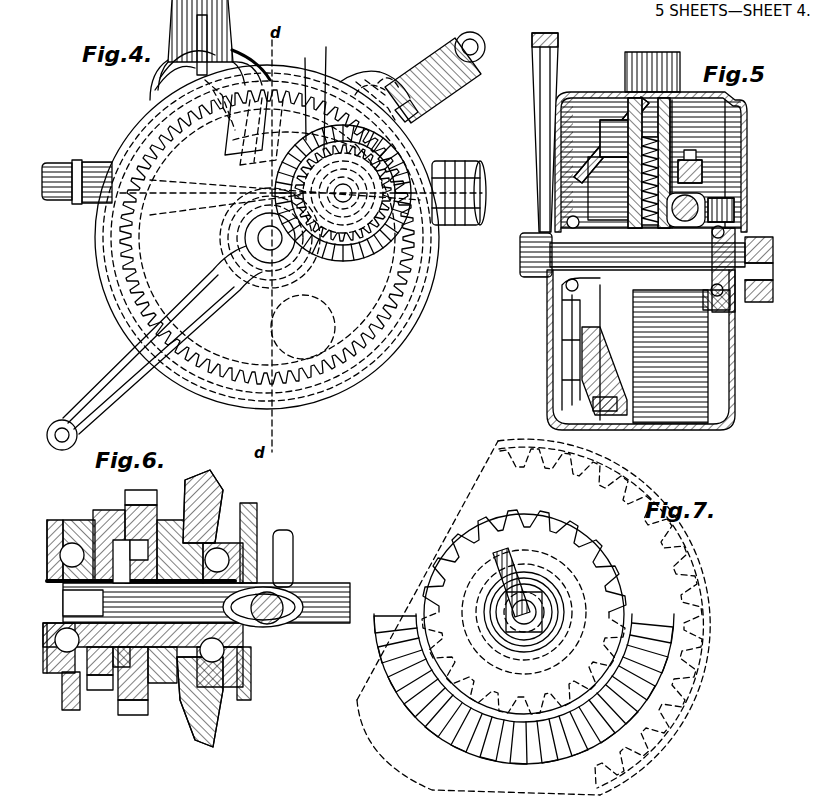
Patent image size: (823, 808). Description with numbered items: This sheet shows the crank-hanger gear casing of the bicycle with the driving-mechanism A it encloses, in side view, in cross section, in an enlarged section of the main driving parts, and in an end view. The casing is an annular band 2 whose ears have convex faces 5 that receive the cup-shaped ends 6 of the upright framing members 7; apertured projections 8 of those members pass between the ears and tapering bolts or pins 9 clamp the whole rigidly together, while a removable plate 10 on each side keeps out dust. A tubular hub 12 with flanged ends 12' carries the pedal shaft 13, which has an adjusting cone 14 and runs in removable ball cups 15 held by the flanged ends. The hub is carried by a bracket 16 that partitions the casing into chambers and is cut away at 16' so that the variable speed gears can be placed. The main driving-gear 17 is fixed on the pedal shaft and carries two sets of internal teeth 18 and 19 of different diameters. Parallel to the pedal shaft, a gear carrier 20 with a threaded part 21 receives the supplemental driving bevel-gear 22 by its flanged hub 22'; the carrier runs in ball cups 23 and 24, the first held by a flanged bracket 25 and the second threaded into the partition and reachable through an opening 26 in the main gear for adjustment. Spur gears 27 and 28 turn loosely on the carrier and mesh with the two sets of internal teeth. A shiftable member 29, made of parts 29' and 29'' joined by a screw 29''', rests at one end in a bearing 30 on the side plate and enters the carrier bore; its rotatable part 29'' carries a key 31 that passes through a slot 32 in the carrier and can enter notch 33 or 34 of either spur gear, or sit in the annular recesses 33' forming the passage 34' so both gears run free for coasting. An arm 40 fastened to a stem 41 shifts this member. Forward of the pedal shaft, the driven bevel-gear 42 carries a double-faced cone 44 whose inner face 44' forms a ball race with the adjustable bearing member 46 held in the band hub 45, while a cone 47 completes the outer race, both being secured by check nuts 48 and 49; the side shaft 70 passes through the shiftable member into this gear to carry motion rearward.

In FIG. 4, the annular member or band 2 is at (312, 402).
In FIG. 4, the convex faces 5 is at (172, 82).
In FIG. 4, the cup-shaped ends 6 is at (170, 96).
In FIG. 4, the upright framing members 7 is at (175, 25).
In FIG. 5, the upright framing members 7 is at (652, 60).
In FIG. 4, the transversely apertured projections 8 is at (300, 80).
In FIG. 4, the tapering bolts or pins 9 is at (400, 100).
In FIG. 4, the removable plate 10 is at (368, 372).
In FIG. 5, the removable plate 10 is at (740, 380).
In FIG. 4, the tubular hub 12 is at (255, 238).
In FIG. 5, the tubular hub 12 is at (670, 356).
In FIG. 4, the flanged ends 12' is at (202, 241).
In FIG. 5, the flanged ends 12' is at (594, 349).
In FIG. 4, the pedal shaft 13 is at (264, 262).
In FIG. 5, the pedal shaft 13 is at (690, 268).
In FIG. 5, the adjusting cone 14 is at (735, 306).
In FIG. 5, the removable ball cups 15 is at (728, 312).
In FIG. 5, the bracket 16 is at (541, 349).
In FIG. 6, the bracket 16 is at (53, 692).
In FIG. 5, the cut-away portion 16' is at (526, 156).
In FIG. 4, the main driving-gear 17 is at (190, 370).
In FIG. 5, the main driving-gear 17 is at (552, 372).
In FIG. 4, the internal gear teeth 18 is at (223, 385).
In FIG. 5, the internal gear teeth 18 is at (590, 410).
In FIG. 7, the internal gear teeth 18 is at (625, 770).
In FIG. 4, the internal gear teeth 19 is at (243, 396).
In FIG. 5, the internal gear teeth 19 is at (610, 418).
In FIG. 7, the internal gear teeth 19 is at (650, 735).
In FIG. 4, the gear carrier 20 is at (336, 254).
In FIG. 6, the gear carrier 20 is at (140, 660).
In FIG. 7, the gear carrier 20 is at (486, 596).
In FIG. 6, the screw threaded part 21 is at (178, 672).
In FIG. 4, the supplemental driving bevel-gear 22 is at (343, 202).
In FIG. 5, the supplemental driving bevel-gear 22 is at (684, 163).
In FIG. 6, the supplemental driving bevel-gear 22 is at (205, 608).
In FIG. 7, the supplemental driving bevel-gear 22 is at (544, 639).
In FIG. 4, the screw threaded and flanged hub 22' is at (343, 224).
In FIG. 5, the screw threaded and flanged hub 22' is at (584, 155).
In FIG. 7, the screw threaded and flanged hub 22' is at (574, 612).
In FIG. 6, the ball cup 23 is at (242, 541).
In FIG. 6, the adjustable ball cup 24 is at (52, 545).
In FIG. 4, the flanged bracket 25 is at (284, 122).
In FIG. 5, the flanged bracket 25 is at (732, 106).
In FIG. 6, the flanged bracket 25 is at (256, 516).
In FIG. 4, the opening 26 is at (282, 335).
In FIG. 5, the opening 26 is at (563, 325).
In FIG. 4, the spur gear 27 is at (318, 88).
In FIG. 6, the spur gear 27 is at (92, 690).
In FIG. 7, the spur gear 27 is at (600, 585).
In FIG. 4, the spur gear 28 is at (486, 232).
In FIG. 5, the spur gear 28 is at (552, 226).
In FIG. 6, the spur gear 28 is at (146, 715).
In FIG. 7, the spur gear 28 is at (610, 608).
In FIG. 4, the longitudinally adjustable member 29 is at (384, 221).
In FIG. 5, the longitudinally adjustable member 29 is at (722, 195).
In FIG. 6, the longitudinally adjustable member 29 is at (198, 626).
In FIG. 6, the shiftable member part 29' is at (323, 647).
In FIG. 7, the shiftable member part 29' is at (442, 718).
In FIG. 6, the rotatable part 29'' is at (59, 603).
In FIG. 5, the fastening device or screw 29''' is at (766, 208).
In FIG. 7, the fastening device or screw 29''' is at (424, 677).
In FIG. 5, the support or bearing 30 is at (740, 202).
In FIG. 6, the key 31 is at (100, 520).
In FIG. 7, the key 31 is at (560, 560).
In FIG. 6, the slot 32 is at (100, 576).
In FIG. 6, the notch 33 is at (130, 572).
In FIG. 6, the annular recesses 33' is at (149, 656).
In FIG. 7, the annular recesses 33' is at (441, 558).
In FIG. 6, the notch 34 is at (126, 571).
In FIG. 6, the passage 34' is at (104, 707).
In FIG. 4, the arm 40 is at (236, 158).
In FIG. 5, the arm 40 is at (702, 176).
In FIG. 4, the projection or stem 41 is at (283, 182).
In FIG. 6, the projection or stem 41 is at (296, 556).
In FIG. 7, the projection or stem 41 is at (500, 556).
In FIG. 4, the bevel-gear 42 is at (432, 170).
In FIG. 4, the double-faced cone 44 is at (471, 146).
In FIG. 4, the inner face 44' is at (492, 208).
In FIG. 5, the inner face 44' is at (536, 203).
In FIG. 4, the hub 45 is at (440, 186).
In FIG. 4, the adjustable bearing member 46 is at (470, 168).
In FIG. 4, the cone 47 is at (476, 182).
In FIG. 4, the check nut 48 is at (478, 190).
In FIG. 4, the check nut 49 is at (456, 178).
In FIG. 5, the side shaft 70 is at (735, 222).
In FIG. 6, the side shaft 70 is at (282, 605).
In FIG. 5, the driving-mechanism A is at (640, 328).